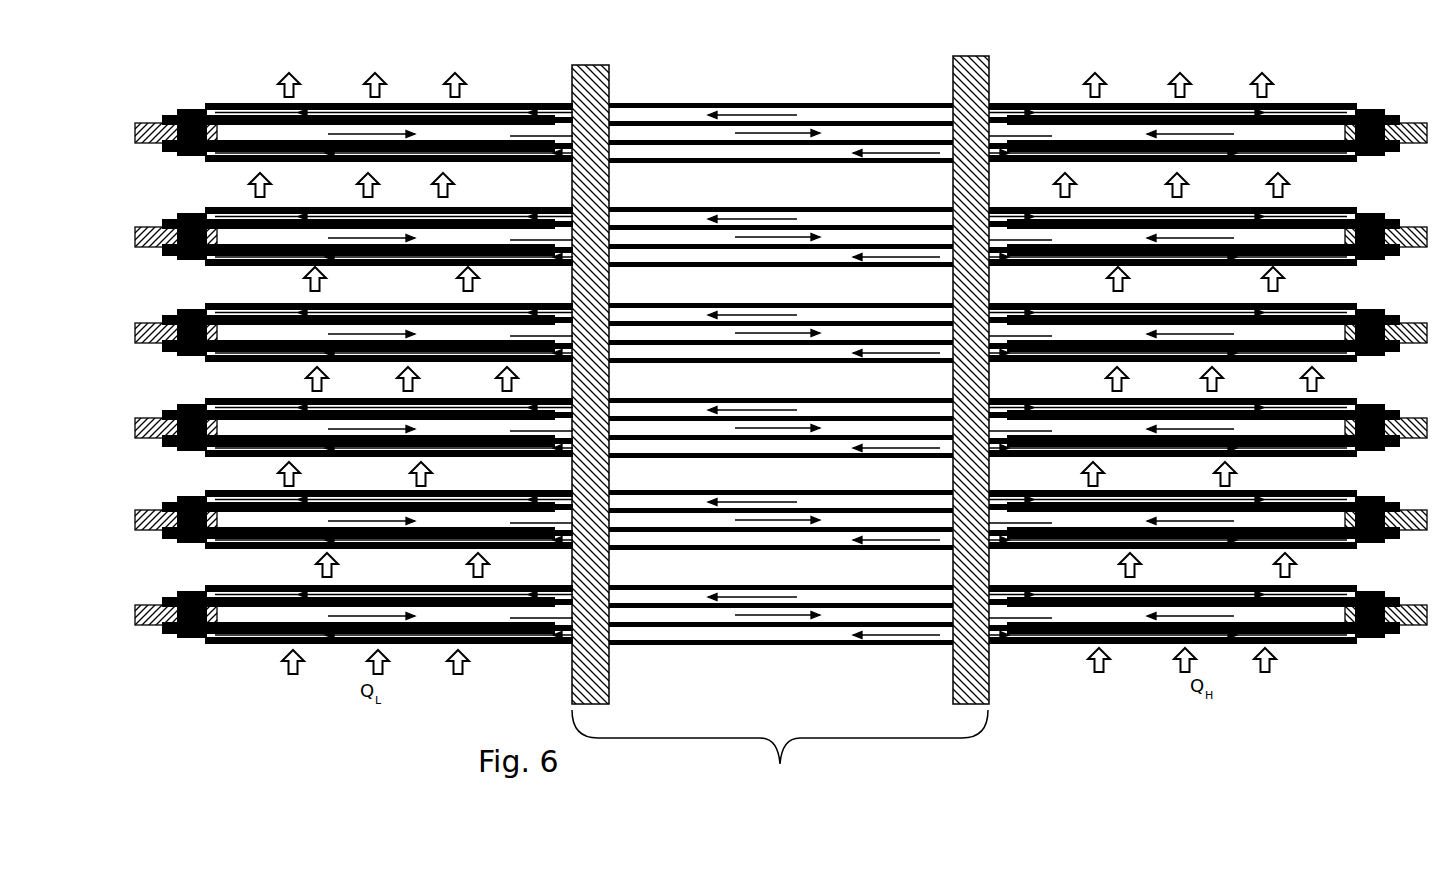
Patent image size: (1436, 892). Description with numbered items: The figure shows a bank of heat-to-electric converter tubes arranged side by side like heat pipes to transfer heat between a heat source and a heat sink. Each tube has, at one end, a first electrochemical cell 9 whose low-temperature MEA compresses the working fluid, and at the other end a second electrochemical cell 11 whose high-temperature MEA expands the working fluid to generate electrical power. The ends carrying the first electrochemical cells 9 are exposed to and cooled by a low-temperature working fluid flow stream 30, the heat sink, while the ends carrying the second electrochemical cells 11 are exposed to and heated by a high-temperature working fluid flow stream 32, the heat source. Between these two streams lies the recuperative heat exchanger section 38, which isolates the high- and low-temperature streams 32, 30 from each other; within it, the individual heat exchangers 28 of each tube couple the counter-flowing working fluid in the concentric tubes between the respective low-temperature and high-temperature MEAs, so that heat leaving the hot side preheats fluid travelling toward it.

The first electrochemical cell 9 is at (237, 666).
The second electrochemical cell 11 is at (1335, 672).
The midsection 28 is at (739, 658).
The low-temperature working fluid flow stream 30 is at (459, 650).
The high-temperature working fluid flow stream 32 is at (1101, 652).
The recuperative heat exchanger section 38 is at (780, 424).